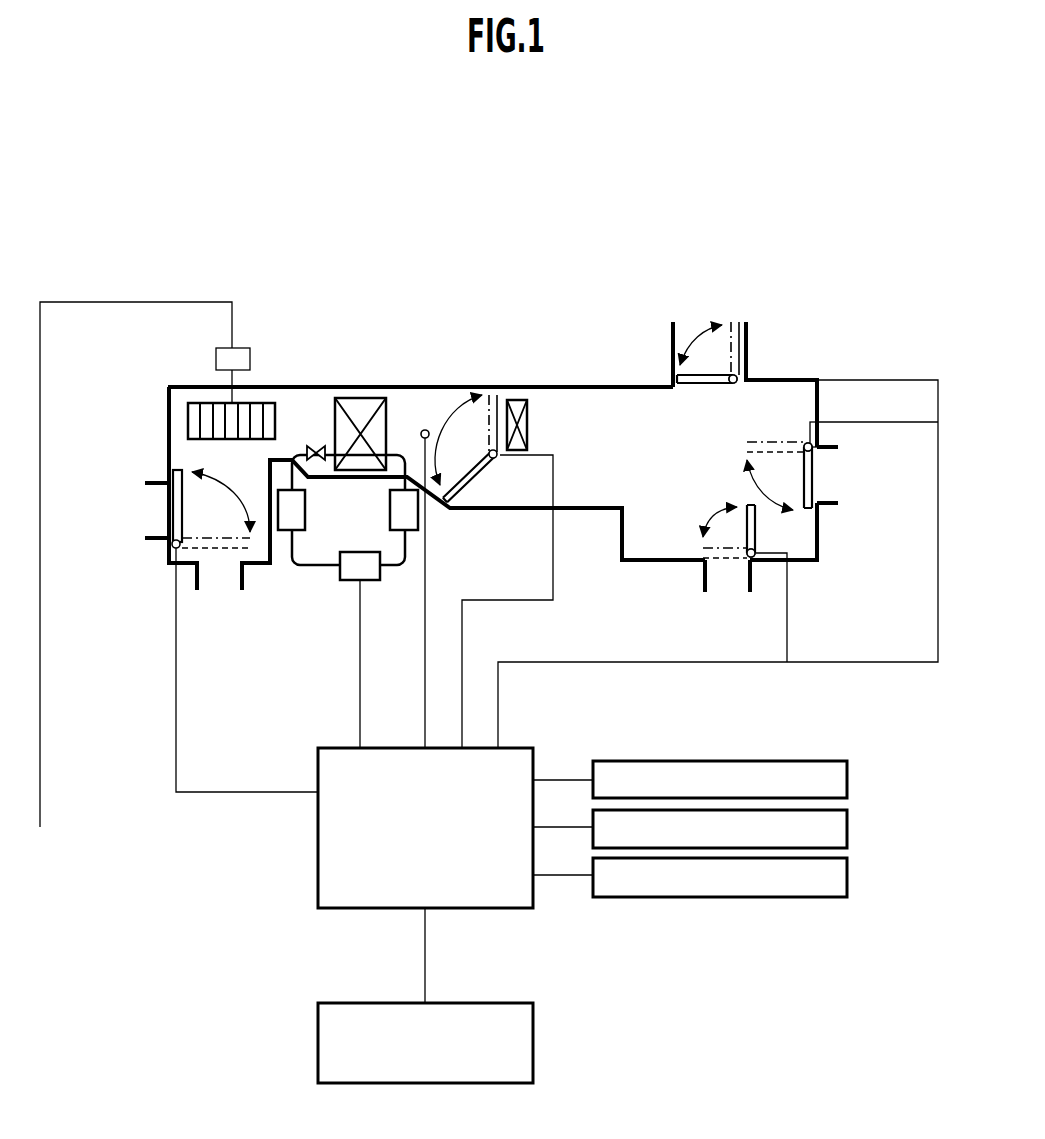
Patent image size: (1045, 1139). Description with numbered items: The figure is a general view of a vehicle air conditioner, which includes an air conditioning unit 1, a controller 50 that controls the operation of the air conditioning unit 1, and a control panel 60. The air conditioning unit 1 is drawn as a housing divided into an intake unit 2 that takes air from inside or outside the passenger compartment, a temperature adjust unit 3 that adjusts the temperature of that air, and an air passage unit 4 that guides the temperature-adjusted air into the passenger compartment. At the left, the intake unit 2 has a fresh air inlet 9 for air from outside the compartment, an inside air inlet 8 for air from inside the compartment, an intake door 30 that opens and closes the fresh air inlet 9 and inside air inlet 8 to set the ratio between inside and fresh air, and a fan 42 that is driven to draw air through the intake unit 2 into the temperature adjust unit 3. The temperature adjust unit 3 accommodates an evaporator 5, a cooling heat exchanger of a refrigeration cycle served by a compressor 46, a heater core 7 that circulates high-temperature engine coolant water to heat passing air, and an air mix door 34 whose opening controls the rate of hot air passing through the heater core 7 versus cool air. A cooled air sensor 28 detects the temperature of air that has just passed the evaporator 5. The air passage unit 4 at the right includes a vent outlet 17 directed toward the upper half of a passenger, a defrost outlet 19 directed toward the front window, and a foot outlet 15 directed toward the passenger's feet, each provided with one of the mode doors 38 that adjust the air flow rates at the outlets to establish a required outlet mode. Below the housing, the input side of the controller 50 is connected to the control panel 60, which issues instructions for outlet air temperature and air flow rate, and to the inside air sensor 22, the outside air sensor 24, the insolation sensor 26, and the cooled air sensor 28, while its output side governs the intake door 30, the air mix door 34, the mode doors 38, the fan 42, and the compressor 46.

The air conditioning unit 1 is at (445, 288).
The intake unit 2 is at (275, 377).
The temperature adjust unit 3 is at (497, 373).
The air passage unit 4 is at (652, 380).
The evaporator 5 is at (357, 387).
The heater core 7 is at (528, 423).
The inside air inlet 8 is at (220, 572).
The fresh air inlet 9 is at (158, 520).
The foot outlet 15 is at (718, 575).
The vent outlet 17 is at (688, 332).
The defrost outlet 19 is at (827, 472).
The inside air sensor 22 is at (850, 778).
The outside air sensor 24 is at (850, 827).
The insolation sensor 26 is at (850, 875).
The cooled air sensor 28 is at (424, 430).
The intake door 30 is at (173, 497).
The air mix door 34 is at (477, 480).
The mode doors 38 is at (710, 392).
The fan 42 is at (190, 417).
The compressor 46 is at (338, 573).
The controller 50 is at (318, 882).
The control panel 60 is at (318, 1063).